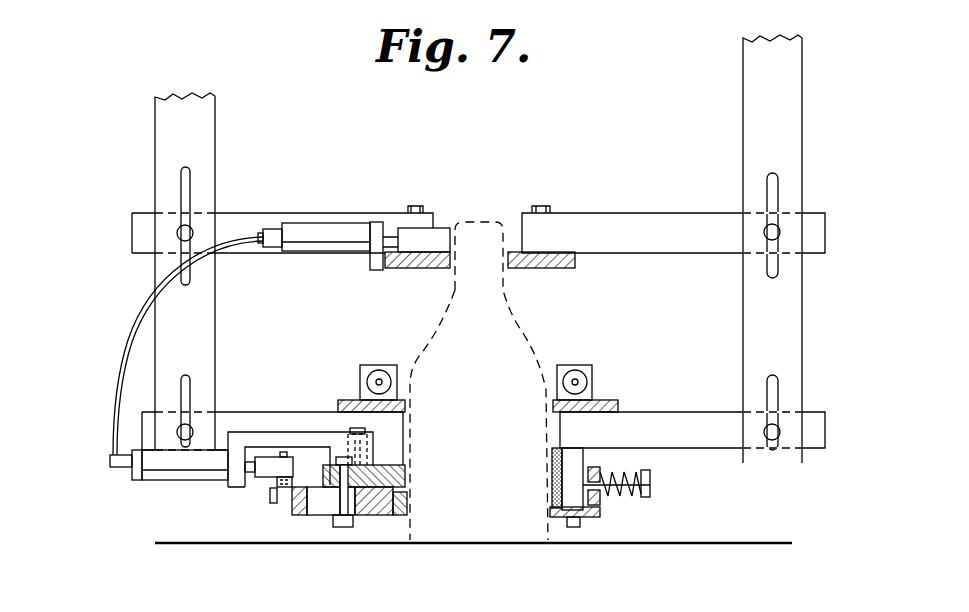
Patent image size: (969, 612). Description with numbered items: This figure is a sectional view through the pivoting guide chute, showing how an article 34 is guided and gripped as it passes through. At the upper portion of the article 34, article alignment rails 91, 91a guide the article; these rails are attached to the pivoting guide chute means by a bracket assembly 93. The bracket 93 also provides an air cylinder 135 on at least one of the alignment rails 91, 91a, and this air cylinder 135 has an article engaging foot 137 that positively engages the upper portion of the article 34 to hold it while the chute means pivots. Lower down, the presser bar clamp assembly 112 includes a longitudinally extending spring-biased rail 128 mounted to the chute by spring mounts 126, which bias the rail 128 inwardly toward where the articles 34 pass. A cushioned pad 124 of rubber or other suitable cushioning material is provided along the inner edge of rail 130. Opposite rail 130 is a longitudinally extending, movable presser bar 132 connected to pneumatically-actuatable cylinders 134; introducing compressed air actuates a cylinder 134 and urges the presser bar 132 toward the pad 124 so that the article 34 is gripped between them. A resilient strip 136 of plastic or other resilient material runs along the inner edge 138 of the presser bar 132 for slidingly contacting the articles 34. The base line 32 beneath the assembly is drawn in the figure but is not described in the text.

The bracket assembly 93 is at (167, 228).
The air cylinder 135 is at (313, 235).
The article engaging foot 137 is at (413, 237).
The article alignment rail 91 is at (422, 262).
The article alignment rail 91a is at (550, 266).
The article 34 is at (523, 333).
The rail 130 is at (573, 458).
The presser bar clamp assembly 112 is at (602, 458).
The spring mounts 126 is at (632, 500).
The pneumatically-actuatable cylinder 134 is at (183, 475).
The presser bar 132 is at (360, 527).
The inner edge 138 is at (394, 522).
The resilient strip 136 is at (405, 490).
The cushioned pad 124 is at (553, 485).
The spring-biased rail 128 is at (572, 522).
The base 32 is at (280, 611).